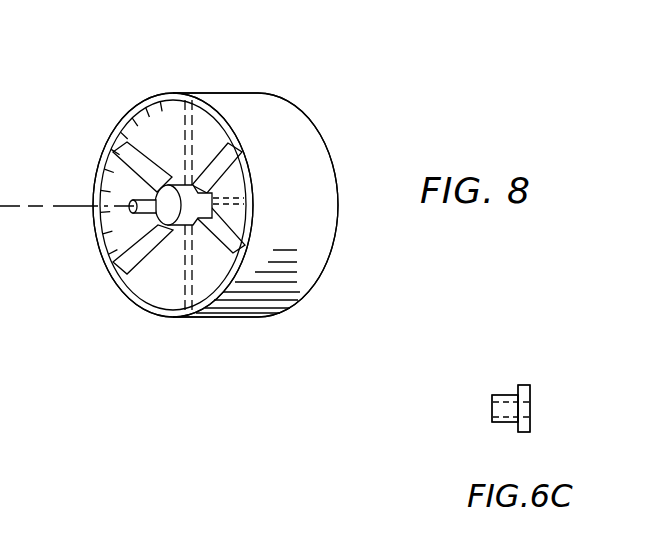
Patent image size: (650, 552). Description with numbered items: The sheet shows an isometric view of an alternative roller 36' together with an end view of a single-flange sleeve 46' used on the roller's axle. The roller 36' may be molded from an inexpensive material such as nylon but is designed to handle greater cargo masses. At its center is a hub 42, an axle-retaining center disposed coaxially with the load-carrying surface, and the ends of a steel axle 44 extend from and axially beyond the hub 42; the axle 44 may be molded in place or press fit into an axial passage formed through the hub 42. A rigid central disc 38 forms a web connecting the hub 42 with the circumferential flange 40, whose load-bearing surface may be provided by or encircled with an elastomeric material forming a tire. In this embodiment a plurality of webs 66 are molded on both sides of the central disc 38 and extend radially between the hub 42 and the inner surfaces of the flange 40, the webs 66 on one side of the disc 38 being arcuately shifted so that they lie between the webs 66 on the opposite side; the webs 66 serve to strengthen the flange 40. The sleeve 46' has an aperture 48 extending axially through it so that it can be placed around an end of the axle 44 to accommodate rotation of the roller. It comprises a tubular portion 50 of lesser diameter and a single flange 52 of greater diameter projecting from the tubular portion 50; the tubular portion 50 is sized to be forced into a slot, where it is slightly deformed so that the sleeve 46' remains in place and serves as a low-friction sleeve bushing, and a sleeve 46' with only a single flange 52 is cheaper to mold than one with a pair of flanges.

In FIG. 8, the alternative roller 36' is at (215, 172).
In FIG. 8, the central disc 38 is at (160, 128).
In FIG. 8, the flange 40 is at (307, 173).
In FIG. 8, the hub 42 is at (148, 193).
In FIG. 8, the axle 44 is at (153, 222).
In FIG. 8, the webs 66 is at (122, 143).
In FIG. 6C, the sleeve 46' is at (503, 389).
In FIG. 6C, the aperture 48 is at (533, 407).
In FIG. 6C, the tubular portion 50 is at (508, 423).
In FIG. 6C, the flange 52 is at (532, 384).